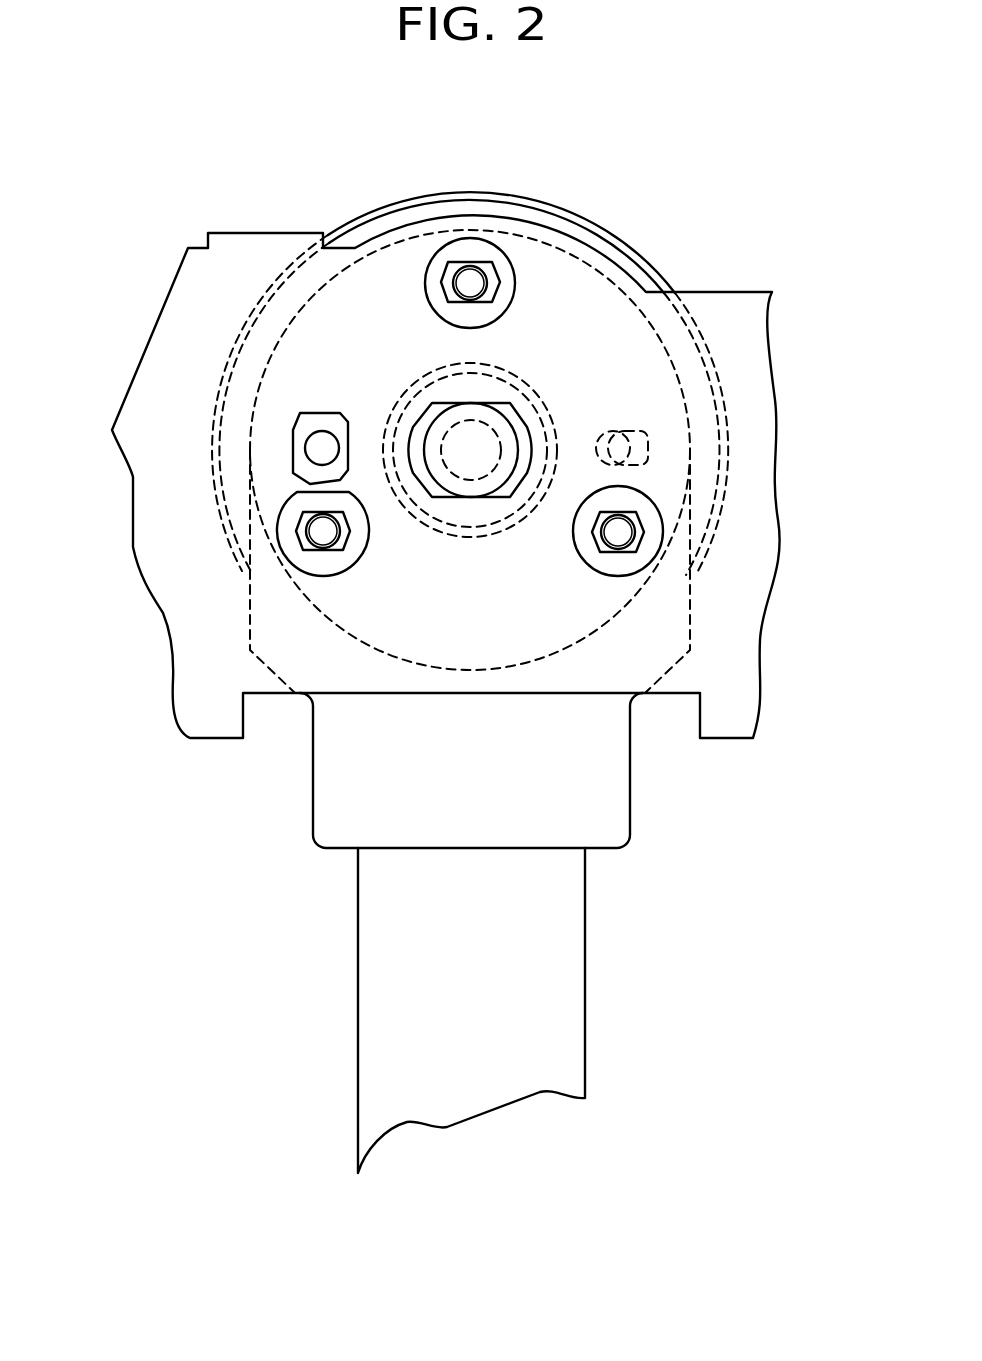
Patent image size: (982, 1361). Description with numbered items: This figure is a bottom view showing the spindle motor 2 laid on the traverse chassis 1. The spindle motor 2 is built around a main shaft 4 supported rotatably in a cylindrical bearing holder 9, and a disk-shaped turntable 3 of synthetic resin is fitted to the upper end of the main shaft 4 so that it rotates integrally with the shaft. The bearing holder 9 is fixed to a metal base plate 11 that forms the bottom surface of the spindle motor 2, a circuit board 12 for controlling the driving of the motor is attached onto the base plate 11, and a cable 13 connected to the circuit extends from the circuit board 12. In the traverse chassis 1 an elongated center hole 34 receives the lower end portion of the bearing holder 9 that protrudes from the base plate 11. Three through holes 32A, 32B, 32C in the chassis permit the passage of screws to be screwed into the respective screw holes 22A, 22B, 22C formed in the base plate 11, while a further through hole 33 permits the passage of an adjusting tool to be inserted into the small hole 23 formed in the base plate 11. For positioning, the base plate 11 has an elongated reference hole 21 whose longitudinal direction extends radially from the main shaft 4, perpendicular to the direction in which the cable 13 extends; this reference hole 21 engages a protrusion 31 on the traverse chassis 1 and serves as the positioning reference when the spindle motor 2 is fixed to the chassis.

The traverse chassis 1 is at (260, 233).
The spindle motor 2 is at (374, 204).
The turntable 3 is at (600, 227).
The main shaft 4 is at (412, 442).
The bearing holder 9 is at (442, 447).
The base plate 11 is at (650, 350).
The circuit board 12 is at (617, 803).
The cable 13 is at (570, 981).
The reference hole 21 is at (633, 463).
The screw hole 22A is at (513, 288).
The screw hole 22B is at (307, 533).
The screw hole 22C is at (640, 535).
The small hole 23 is at (320, 448).
The protrusion 31 is at (633, 448).
The through hole 32A is at (451, 263).
The through hole 32B is at (297, 527).
The through hole 32C is at (647, 527).
The through hole 33 is at (293, 437).
The center hole 34 is at (530, 437).